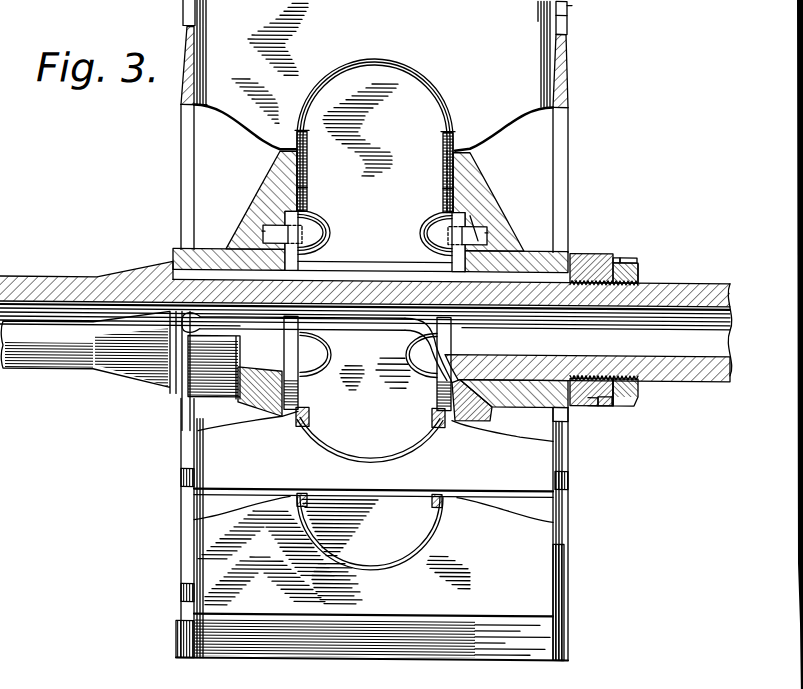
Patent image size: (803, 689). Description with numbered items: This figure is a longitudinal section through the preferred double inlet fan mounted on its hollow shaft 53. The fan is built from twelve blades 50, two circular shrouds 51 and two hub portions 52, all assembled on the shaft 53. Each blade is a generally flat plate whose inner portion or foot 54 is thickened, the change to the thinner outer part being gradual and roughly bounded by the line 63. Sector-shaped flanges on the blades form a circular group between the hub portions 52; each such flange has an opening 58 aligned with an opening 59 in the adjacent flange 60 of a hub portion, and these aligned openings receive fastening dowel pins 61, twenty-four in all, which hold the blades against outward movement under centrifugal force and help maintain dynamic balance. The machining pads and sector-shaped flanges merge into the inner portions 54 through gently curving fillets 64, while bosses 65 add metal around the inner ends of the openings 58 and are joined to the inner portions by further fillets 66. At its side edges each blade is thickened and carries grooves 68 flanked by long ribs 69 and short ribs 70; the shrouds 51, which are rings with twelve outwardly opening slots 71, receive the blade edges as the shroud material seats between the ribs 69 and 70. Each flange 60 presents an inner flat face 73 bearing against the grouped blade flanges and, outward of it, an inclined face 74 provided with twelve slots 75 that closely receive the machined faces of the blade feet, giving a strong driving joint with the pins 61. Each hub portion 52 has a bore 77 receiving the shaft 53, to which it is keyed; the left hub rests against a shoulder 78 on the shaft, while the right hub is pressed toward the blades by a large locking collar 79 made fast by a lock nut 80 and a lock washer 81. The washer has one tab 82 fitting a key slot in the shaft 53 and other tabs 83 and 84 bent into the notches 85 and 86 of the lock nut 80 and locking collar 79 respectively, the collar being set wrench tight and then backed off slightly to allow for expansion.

The blades 50 is at (369, 25).
The circular shrouds 51 is at (186, 51).
The hub portions 52 is at (210, 250).
The hollow shaft 53 is at (696, 289).
The inner portion or foot 54 is at (384, 139).
The opening 58 is at (440, 221).
The opening 59 is at (480, 226).
The flange 60 is at (284, 157).
The fastening dowel pins 61 is at (263, 232).
The line 63 is at (408, 68).
The fillets 64 is at (450, 194).
The bosses 65 is at (320, 232).
The fillets 66 is at (303, 237).
The grooves 68 is at (572, 4).
The ribs 69 is at (546, 13).
The ribs 70 is at (567, 14).
The slots 71 is at (568, 33).
The inner flat face 73 is at (452, 262).
The inclined face 74 is at (453, 186).
The slots 75 is at (297, 178).
The bore 77 is at (572, 408).
The shoulder 78 is at (170, 263).
The locking collar 79 is at (585, 252).
The lock nut 80 is at (639, 270).
The lock washer 81 is at (618, 252).
The tab 82 is at (593, 400).
The tab 83 is at (626, 256).
The tab 84 is at (604, 395).
The notch 85 is at (638, 257).
The notch 86 is at (594, 401).